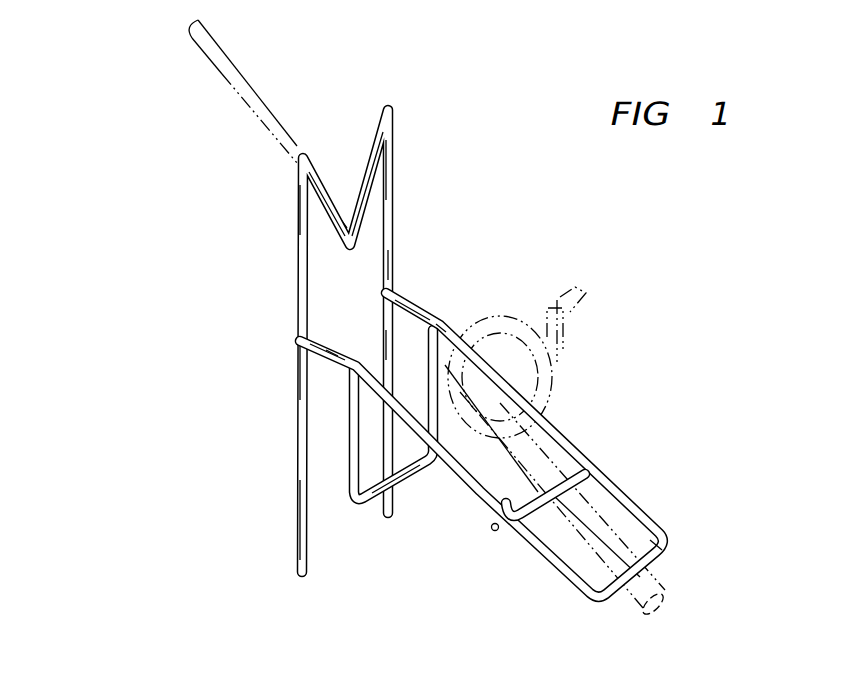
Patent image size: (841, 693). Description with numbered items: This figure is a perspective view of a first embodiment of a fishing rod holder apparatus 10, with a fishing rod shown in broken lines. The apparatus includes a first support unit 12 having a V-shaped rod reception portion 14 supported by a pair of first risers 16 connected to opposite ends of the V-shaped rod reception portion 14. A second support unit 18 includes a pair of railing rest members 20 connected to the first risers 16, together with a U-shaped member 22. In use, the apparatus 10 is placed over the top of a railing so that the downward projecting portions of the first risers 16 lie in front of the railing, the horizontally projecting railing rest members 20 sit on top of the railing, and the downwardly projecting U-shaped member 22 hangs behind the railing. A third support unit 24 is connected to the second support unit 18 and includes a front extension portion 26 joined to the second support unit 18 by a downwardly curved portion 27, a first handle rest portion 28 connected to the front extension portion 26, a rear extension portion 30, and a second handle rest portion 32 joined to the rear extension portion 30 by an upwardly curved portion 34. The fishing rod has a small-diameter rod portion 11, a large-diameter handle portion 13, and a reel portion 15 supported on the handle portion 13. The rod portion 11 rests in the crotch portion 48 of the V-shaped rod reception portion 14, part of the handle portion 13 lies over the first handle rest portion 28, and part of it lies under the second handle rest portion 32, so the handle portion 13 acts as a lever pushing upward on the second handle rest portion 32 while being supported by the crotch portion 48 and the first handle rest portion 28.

The fishing rod holder apparatus 10 is at (180, 205).
The rod portion 11 is at (226, 62).
The first support unit 12 is at (350, 298).
The handle portion 13 is at (387, 290).
The V-shaped rod reception portion 14 is at (366, 165).
The reel portion 15 is at (560, 357).
The first risers 16 is at (298, 318).
The second support unit 18 is at (340, 332).
The railing rest members 20 is at (327, 360).
The U-shaped member 22 is at (381, 475).
The third support unit 24 is at (458, 419).
The front extension portion 26 is at (435, 465).
The downwardly curved portion 27 is at (438, 318).
The first handle rest portion 28 is at (517, 513).
The rear extension portion 30 is at (620, 507).
The second handle rest portion 32 is at (670, 557).
The upwardly curved portion 34 is at (645, 520).
The crotch portion 48 is at (354, 230).